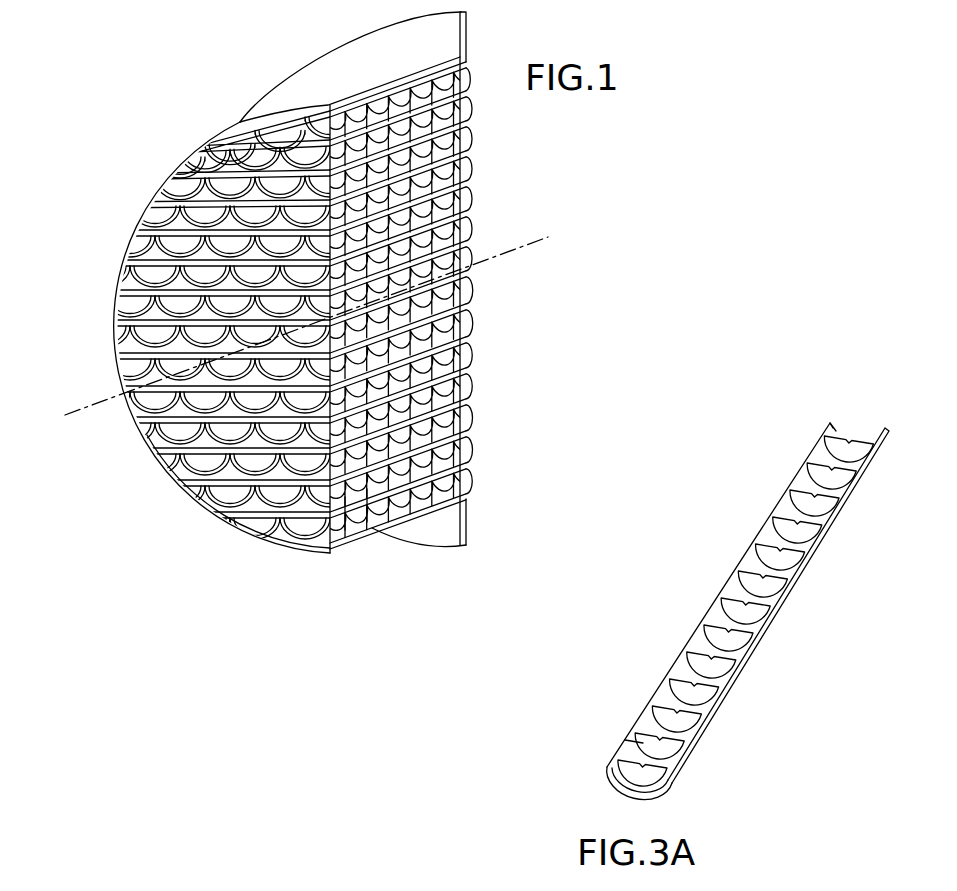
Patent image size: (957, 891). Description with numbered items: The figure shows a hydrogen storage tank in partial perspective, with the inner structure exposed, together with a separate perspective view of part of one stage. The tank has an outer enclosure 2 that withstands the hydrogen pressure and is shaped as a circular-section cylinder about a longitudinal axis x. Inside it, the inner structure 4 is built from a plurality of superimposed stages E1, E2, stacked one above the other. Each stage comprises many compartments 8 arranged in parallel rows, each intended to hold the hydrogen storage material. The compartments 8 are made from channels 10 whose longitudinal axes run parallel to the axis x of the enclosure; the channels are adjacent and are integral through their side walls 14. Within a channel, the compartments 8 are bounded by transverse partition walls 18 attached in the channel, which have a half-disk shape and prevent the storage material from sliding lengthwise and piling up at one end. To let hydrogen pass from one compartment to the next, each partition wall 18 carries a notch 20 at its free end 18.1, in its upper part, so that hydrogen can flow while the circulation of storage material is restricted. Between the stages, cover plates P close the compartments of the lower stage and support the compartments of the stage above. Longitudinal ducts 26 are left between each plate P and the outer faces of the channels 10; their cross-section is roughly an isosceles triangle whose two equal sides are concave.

In FIG. 1, the outer enclosure 2 is at (313, 100).
In FIG. 1, the inner structure 4 is at (480, 178).
In FIG. 1, the compartment 8 is at (378, 517).
In FIG. 3A, the compartment 8 is at (645, 720).
In FIG. 3A, the channel 10 is at (770, 703).
In FIG. 3A, the side wall 14 is at (673, 770).
In FIG. 1, the transverse partition wall 18 is at (416, 373).
In FIG. 3A, the transverse partition wall 18 is at (733, 637).
In FIG. 3A, the free end 18.1 is at (832, 422).
In FIG. 1, the notch 20 is at (200, 884).
In FIG. 3A, the notch 20 is at (862, 430).
In FIG. 1, the longitudinal duct 26 is at (122, 312).
In FIG. 1, the cover plate P is at (190, 462).
In FIG. 1, the first stage E1 is at (478, 470).
In FIG. 1, the second stage E2 is at (478, 428).
In FIG. 1, the longitudinal axis x is at (557, 242).